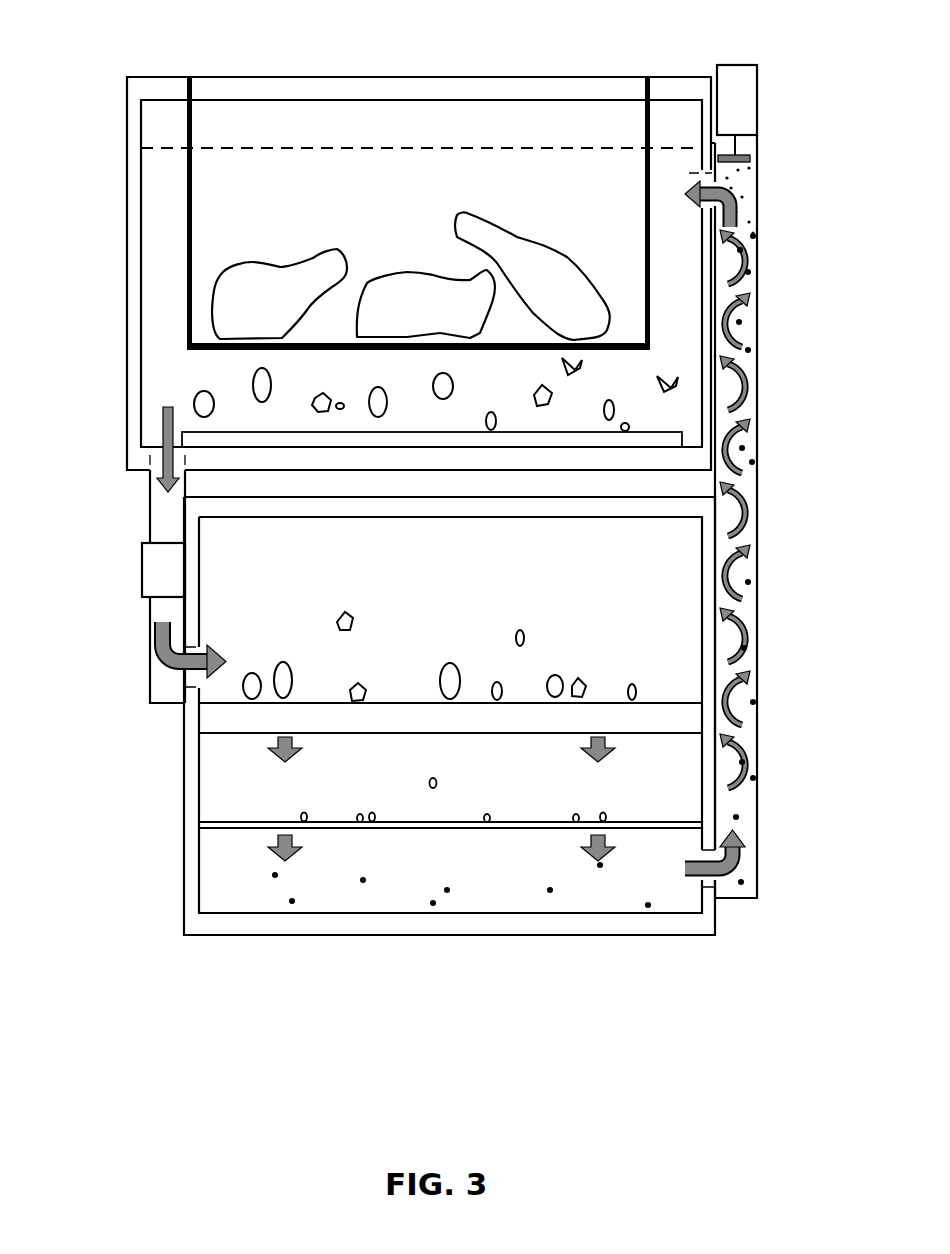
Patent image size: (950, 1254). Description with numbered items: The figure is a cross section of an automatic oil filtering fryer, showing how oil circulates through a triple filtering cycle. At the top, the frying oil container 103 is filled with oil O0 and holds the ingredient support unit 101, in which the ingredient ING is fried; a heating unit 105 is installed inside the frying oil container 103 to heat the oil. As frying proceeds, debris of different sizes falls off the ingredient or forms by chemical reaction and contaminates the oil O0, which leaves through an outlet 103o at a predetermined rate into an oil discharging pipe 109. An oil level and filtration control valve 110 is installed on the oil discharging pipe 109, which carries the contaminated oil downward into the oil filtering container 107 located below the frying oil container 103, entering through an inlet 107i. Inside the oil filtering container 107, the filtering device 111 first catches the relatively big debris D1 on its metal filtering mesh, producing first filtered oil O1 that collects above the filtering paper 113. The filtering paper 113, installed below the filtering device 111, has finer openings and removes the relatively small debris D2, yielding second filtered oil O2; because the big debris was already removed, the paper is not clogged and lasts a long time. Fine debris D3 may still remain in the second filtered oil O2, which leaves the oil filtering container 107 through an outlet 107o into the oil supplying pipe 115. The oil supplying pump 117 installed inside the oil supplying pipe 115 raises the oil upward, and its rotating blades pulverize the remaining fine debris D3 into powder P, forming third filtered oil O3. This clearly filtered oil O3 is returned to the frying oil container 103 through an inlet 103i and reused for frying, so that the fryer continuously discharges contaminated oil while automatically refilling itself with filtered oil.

The ingredient support unit 101 is at (140, 120).
The frying oil container 103 is at (140, 180).
The inlet 103i is at (712, 167).
The outlet 103o is at (147, 462).
The heating unit 105 is at (178, 433).
The oil filtering container 107 is at (195, 513).
The treatment unit inlet 107i is at (182, 680).
The outlet 107o is at (715, 887).
The oil discharging pipe 109 is at (162, 528).
The oil level and filtration control valve 110 is at (162, 572).
The filtering device 111 is at (210, 715).
The filtering paper 113 is at (205, 825).
The oil supplying pipe 115 is at (757, 310).
The oil supplying pump 117 is at (742, 100).
The ingredients ING is at (272, 286).
The powder P is at (752, 195).
The oil O0 is at (168, 406).
The first filtered oil O1 is at (272, 748).
The second filtered oil O2 is at (272, 842).
The third filtered oil O3 is at (712, 208).
The relatively big debris D1 is at (262, 390).
The relatively small debris D2 is at (448, 782).
The fine debris D3 is at (367, 878).